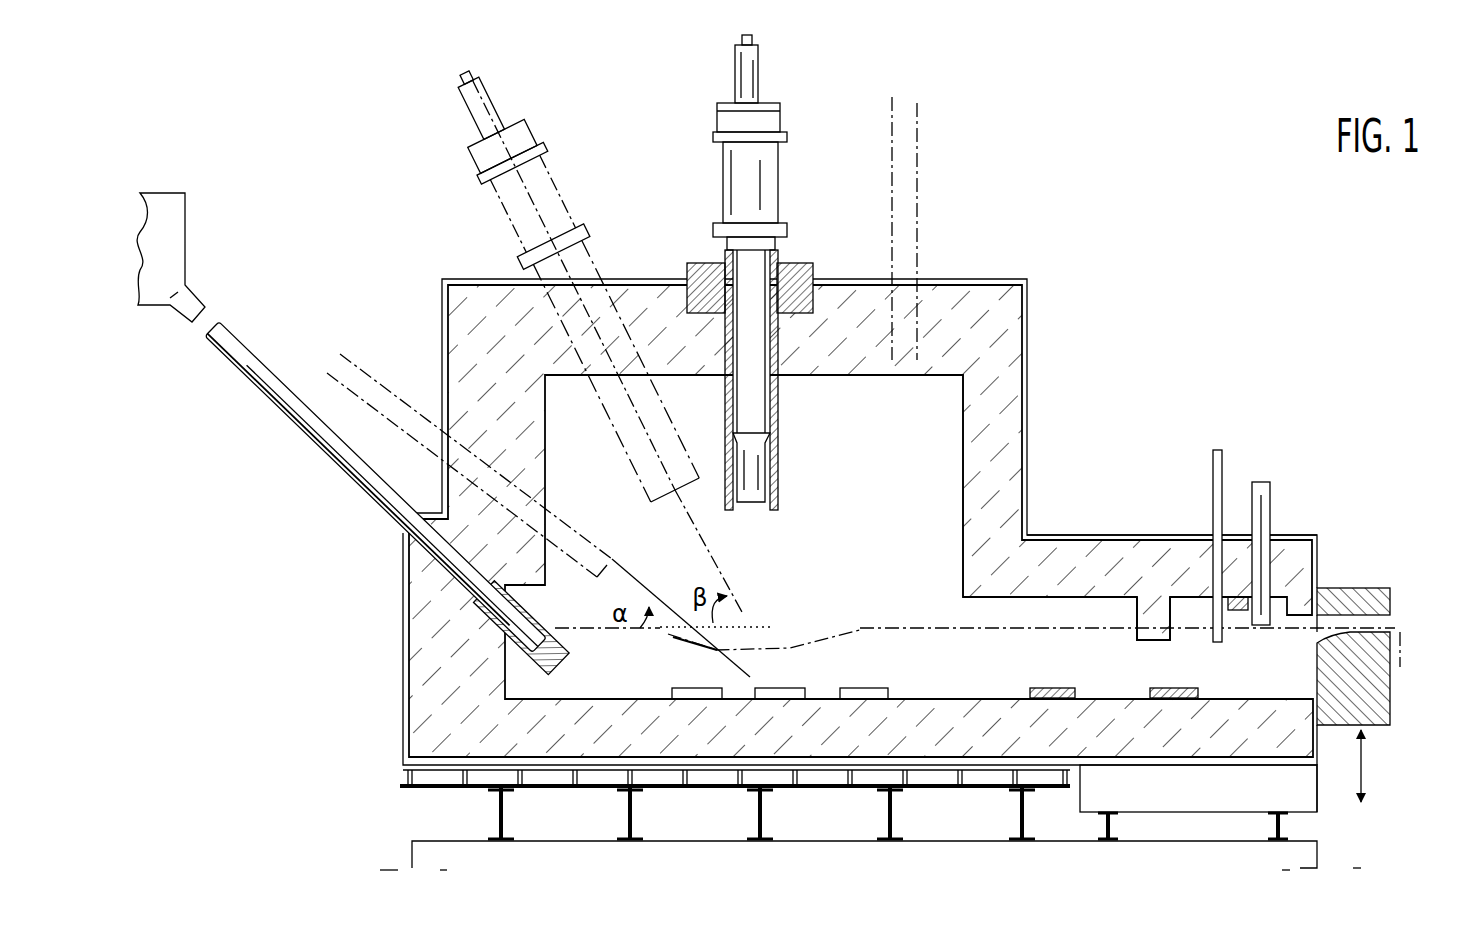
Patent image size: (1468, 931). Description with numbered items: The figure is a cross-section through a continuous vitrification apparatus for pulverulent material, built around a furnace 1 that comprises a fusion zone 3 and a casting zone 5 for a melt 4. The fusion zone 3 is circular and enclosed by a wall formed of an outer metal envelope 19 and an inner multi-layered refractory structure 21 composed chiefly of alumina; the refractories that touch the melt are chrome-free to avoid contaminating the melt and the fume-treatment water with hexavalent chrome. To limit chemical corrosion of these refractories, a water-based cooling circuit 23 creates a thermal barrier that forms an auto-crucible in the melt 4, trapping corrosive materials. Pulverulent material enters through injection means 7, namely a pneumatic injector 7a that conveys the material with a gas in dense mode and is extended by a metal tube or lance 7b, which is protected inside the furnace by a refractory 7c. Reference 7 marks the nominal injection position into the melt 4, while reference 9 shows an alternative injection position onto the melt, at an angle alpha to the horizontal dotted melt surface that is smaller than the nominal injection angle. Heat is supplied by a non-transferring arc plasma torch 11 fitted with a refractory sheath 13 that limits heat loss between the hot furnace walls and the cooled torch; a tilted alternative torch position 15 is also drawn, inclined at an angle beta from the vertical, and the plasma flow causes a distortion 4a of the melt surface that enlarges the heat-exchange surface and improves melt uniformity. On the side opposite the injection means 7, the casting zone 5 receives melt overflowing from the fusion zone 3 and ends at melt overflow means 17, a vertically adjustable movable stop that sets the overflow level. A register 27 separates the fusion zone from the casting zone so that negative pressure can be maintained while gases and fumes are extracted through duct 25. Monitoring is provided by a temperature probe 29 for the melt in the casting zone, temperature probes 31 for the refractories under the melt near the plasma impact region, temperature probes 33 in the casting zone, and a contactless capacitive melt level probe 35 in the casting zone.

The furnace 1 is at (418, 246).
The fusion zone 3 is at (908, 520).
The melt 4 is at (942, 622).
The distortion of the surface of the melt 4a is at (780, 648).
The casting zone 5 is at (1055, 608).
The injection means 7 is at (355, 498).
The pneumatic injector 7a is at (178, 225).
The metal tube or lance 7b is at (312, 436).
The refractory 7c is at (513, 650).
The alternative injection position 9 is at (398, 392).
The non-transferring arc plasma torch 11 is at (716, 156).
The refractory sheath 13 is at (778, 470).
The tilted electrode position 15 is at (458, 114).
The melt overflow means 17 is at (1390, 703).
The outer metal envelope 19 is at (1005, 278).
The inner multi-layered refractory structure 21 is at (990, 342).
The water-based cooling circuit 23 is at (396, 784).
The duct 25 is at (918, 118).
The register 27 is at (1152, 605).
The temperature probe 29 is at (1219, 462).
The temperature probes 31 is at (800, 690).
The temperature probes 33 is at (1075, 692).
The melt level probe 35 is at (1262, 500).